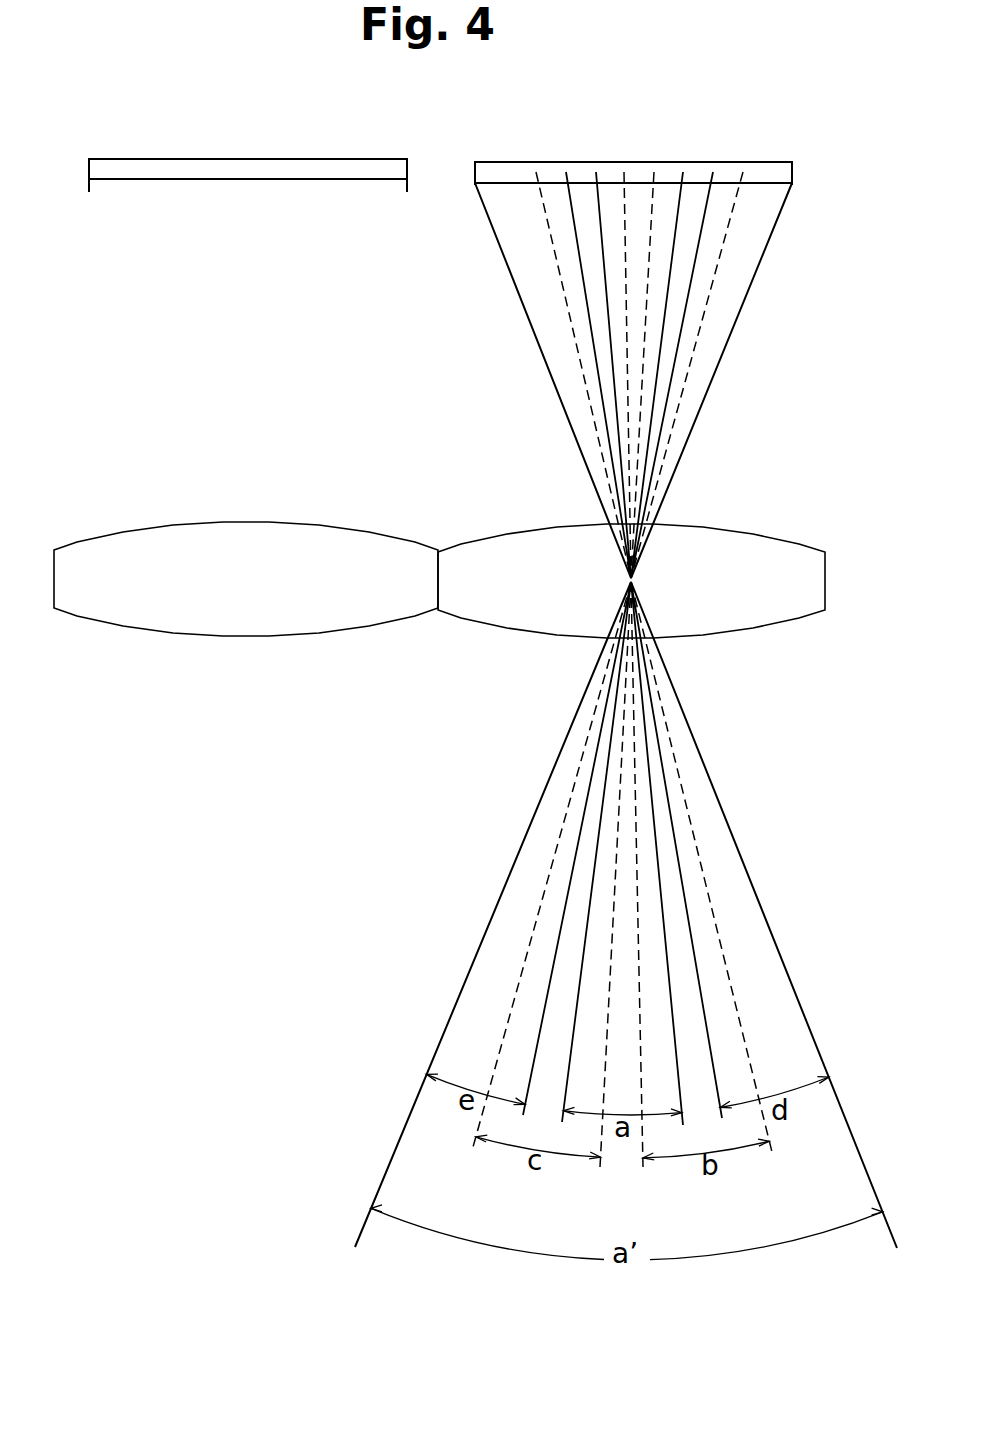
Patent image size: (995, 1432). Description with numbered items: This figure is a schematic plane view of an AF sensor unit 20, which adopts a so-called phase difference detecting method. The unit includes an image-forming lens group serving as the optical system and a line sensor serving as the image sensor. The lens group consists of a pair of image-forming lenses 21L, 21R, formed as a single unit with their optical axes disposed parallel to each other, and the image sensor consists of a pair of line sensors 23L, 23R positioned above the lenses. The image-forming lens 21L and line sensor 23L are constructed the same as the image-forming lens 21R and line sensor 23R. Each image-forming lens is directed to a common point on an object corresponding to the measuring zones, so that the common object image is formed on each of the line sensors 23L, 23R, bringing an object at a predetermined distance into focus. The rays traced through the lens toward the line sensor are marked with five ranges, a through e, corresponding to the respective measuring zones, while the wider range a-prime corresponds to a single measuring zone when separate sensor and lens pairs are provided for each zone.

The line sensor 23R is at (130, 167).
The line sensor 23L is at (767, 172).
The AF sensor unit 20 is at (830, 178).
The image-forming lens 21R is at (76, 598).
The image-forming lens 21L is at (772, 550).